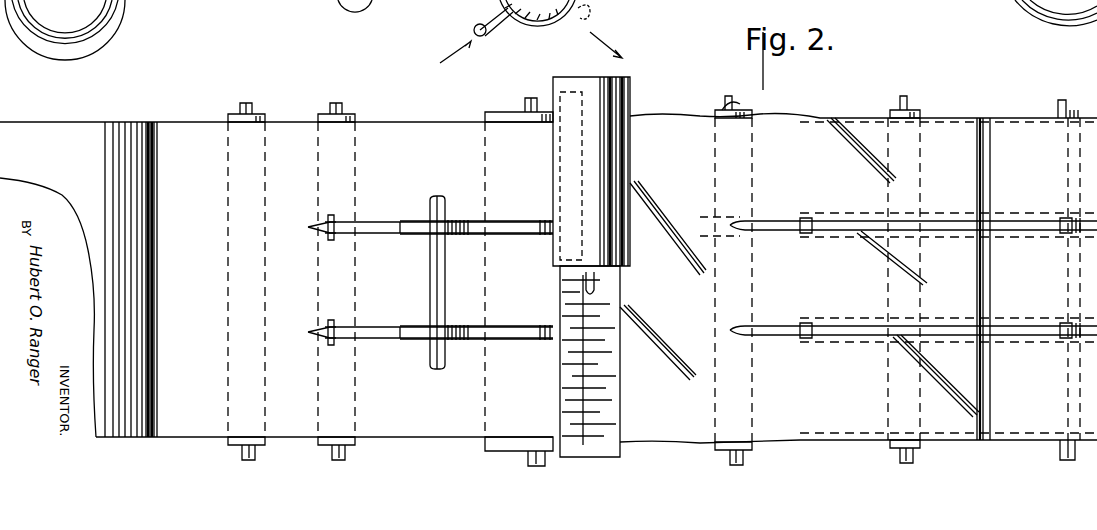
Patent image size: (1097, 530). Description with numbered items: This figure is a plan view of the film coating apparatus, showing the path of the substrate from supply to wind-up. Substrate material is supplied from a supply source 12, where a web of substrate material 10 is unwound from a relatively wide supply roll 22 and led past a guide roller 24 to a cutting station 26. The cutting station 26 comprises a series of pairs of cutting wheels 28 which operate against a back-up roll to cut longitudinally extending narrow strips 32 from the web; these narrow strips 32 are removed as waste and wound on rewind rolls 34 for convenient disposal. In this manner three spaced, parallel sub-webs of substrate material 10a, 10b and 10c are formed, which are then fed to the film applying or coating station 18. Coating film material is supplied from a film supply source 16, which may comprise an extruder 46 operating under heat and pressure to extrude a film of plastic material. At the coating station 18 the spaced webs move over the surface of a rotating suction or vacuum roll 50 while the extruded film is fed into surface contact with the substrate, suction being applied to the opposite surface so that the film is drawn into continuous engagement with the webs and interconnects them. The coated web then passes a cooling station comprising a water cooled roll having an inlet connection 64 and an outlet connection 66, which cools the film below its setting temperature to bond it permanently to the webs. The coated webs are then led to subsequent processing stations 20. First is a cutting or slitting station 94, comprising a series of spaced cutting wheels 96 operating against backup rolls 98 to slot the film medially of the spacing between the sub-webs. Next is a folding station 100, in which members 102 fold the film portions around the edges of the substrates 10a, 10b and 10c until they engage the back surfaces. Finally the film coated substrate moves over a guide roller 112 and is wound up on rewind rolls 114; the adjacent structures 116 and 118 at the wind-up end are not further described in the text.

The web of substrate material 10 is at (195, 432).
The sub-web of substrate material 10a is at (413, 130).
The sub-web of substrate material 10b is at (400, 270).
The sub-web of substrate material 10c is at (398, 382).
The substrate supply source 12 is at (302, 106).
The film supply source 16 is at (658, 88).
The film applying or coating station 18 is at (666, 462).
The subsequent processing stations 20 is at (958, 56).
The supply roll 22 is at (136, 122).
The guide roller 24 is at (228, 130).
The cutting station 26 is at (375, 98).
The cutting wheels 28 is at (312, 227).
The narrow strips 32 is at (380, 220).
The rewind rolls 34 is at (462, 220).
The extruder 46 is at (552, 80).
The suction or vacuum roll 50 is at (488, 114).
The inlet connection 64 is at (478, 26).
The outlet connection 66 is at (556, 30).
The cutting or slitting station 94 is at (740, 86).
The cutting wheels 96 is at (740, 236).
The backup rolls 98 is at (722, 188).
The folding station 100 is at (812, 116).
The folding members 102 is at (806, 218).
The guide roller 112 is at (918, 135).
The rewind rolls 114 is at (1078, 205).
The clip 116 is at (1096, 255).
The clip 118 is at (1088, 430).